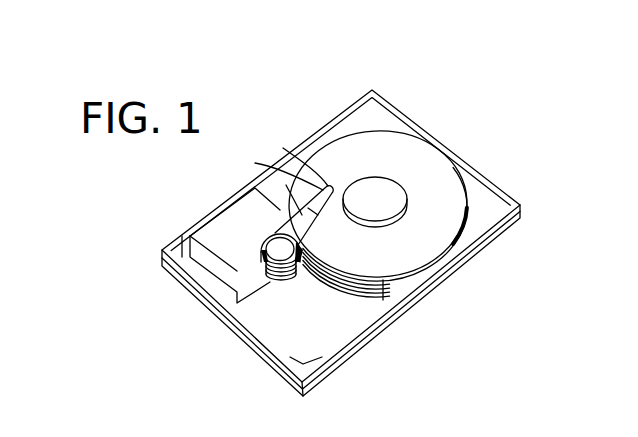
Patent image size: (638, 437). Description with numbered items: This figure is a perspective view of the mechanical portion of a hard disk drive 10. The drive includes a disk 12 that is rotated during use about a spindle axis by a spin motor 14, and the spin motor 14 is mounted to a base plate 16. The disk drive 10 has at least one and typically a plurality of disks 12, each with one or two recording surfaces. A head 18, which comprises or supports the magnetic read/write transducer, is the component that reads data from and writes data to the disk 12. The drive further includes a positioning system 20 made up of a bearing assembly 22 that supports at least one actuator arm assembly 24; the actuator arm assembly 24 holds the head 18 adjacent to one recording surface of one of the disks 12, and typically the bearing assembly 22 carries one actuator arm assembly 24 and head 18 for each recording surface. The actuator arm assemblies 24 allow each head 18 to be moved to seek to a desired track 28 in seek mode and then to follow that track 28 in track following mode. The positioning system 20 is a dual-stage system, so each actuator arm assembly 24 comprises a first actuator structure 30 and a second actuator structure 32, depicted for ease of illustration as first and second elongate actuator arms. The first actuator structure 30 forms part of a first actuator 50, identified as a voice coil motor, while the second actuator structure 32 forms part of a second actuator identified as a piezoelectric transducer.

The disk drive 10 is at (148, 263).
The disk 12 is at (390, 150).
The spin motor 14 is at (388, 190).
The base plate 16 is at (278, 333).
The head 18 is at (298, 165).
The positioning system 20 is at (312, 293).
The bearing assembly 22 is at (278, 255).
The actuator arm assembly 24 is at (320, 227).
The track 28 is at (444, 206).
The first actuator structure 30 is at (305, 233).
The second actuator structure 32 is at (257, 163).
The first actuator 50 is at (217, 278).